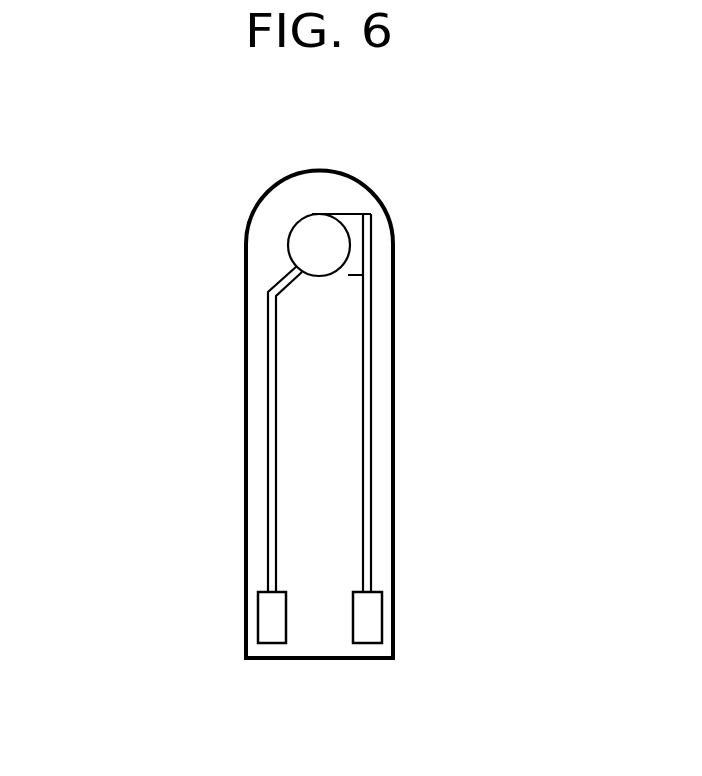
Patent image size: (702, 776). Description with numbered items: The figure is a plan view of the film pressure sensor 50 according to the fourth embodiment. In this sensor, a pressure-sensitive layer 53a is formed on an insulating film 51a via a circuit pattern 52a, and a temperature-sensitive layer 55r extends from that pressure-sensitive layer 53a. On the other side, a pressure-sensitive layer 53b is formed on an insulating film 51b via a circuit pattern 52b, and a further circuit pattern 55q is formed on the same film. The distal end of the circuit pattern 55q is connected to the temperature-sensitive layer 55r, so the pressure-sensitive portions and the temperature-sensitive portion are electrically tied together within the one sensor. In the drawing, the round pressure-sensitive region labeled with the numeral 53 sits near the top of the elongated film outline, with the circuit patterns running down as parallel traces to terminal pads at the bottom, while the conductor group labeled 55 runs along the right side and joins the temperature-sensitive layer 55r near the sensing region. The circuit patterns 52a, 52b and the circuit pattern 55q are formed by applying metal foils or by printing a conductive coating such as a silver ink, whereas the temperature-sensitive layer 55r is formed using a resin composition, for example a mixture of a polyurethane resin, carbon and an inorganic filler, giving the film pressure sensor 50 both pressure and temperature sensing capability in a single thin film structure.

The film pressure sensor 50 is at (405, 415).
The insulating film 51a is at (380, 459).
The insulating film 51b is at (401, 415).
The circuit pattern 52a is at (265, 520).
The circuit pattern 52b is at (182, 454).
The sensing element 53 is at (231, 217).
The pressure-sensitive layer 53a is at (307, 233).
The pressure-sensitive layer 53b is at (231, 217).
The lead conductor 55 is at (407, 421).
The circuit pattern 55q is at (373, 408).
The temperature-sensitive layer 55r is at (349, 268).